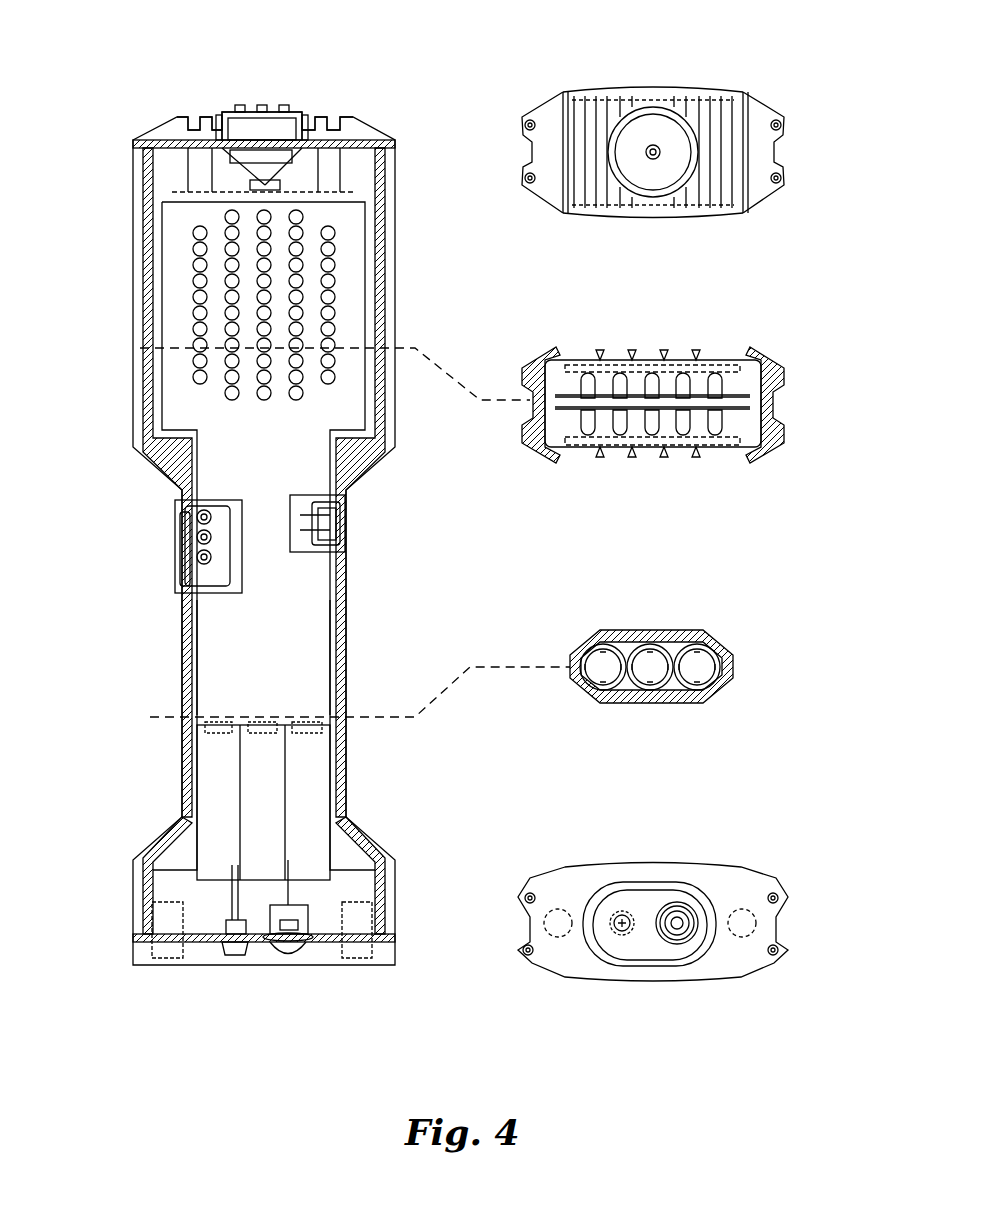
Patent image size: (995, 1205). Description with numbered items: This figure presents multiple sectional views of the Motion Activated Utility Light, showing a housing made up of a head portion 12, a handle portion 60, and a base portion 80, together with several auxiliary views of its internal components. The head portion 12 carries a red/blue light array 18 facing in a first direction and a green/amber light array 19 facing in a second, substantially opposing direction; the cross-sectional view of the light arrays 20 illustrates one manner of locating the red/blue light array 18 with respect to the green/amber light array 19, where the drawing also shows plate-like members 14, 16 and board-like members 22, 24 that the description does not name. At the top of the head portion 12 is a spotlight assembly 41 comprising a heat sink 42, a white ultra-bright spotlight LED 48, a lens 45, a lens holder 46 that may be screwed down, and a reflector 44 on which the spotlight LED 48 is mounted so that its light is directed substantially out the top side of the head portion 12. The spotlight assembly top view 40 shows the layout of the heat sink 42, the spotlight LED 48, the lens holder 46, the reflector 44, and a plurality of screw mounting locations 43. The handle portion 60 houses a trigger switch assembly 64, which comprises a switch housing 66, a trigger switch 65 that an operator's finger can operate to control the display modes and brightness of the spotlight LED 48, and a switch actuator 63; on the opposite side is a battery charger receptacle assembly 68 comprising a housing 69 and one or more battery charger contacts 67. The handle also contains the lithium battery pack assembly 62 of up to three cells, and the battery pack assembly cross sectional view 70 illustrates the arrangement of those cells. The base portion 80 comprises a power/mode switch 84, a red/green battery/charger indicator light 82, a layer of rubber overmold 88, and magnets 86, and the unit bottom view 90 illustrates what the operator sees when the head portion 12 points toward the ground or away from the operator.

The head portion 12 is at (133, 290).
The upper plate 14 is at (590, 366).
The lower plate 16 is at (590, 445).
The red/blue light array 18 is at (698, 374).
The green/amber light array 19 is at (700, 430).
The cross-sectional view of the light arrays 20 is at (780, 340).
The upper circuit board 22 is at (750, 395).
The lower circuit board 24 is at (750, 408).
The spotlight assembly top view 40 is at (780, 68).
The spotlight assembly 41 is at (300, 98).
The heat sink 42 is at (186, 128).
The screw mounting locations 43 is at (783, 180).
The reflector 44 is at (243, 128).
The lens 45 is at (272, 106).
The lens holder 46 is at (308, 118).
The spotlight LED 48 is at (262, 180).
The handle portion 60 is at (204, 657).
The battery pack assembly 62 is at (270, 780).
The switch actuator 63 is at (203, 555).
The trigger switch assembly 64 is at (168, 516).
The trigger switch 65 is at (197, 537).
The switch housing 66 is at (187, 588).
The battery charger contacts 67 is at (345, 535).
The battery charger receptacle assembly 68 is at (352, 505).
The housing 69 is at (345, 548).
The battery pack assembly cross sectional view 70 is at (775, 628).
The base portion 80 is at (133, 925).
The battery/charger indicator light 82 is at (232, 955).
The power/mode switch 84 is at (290, 955).
The magnets 86 is at (168, 958).
The layer of rubber overmold 88 is at (140, 957).
The unit bottom view 90 is at (780, 858).